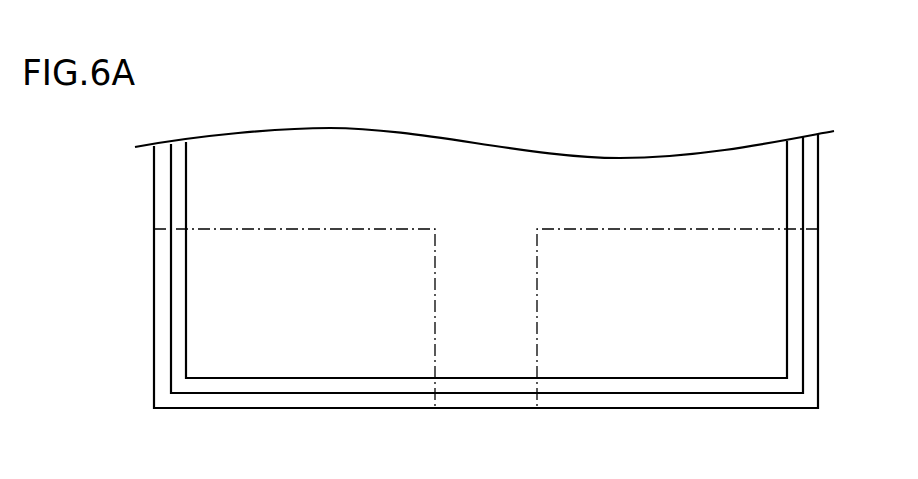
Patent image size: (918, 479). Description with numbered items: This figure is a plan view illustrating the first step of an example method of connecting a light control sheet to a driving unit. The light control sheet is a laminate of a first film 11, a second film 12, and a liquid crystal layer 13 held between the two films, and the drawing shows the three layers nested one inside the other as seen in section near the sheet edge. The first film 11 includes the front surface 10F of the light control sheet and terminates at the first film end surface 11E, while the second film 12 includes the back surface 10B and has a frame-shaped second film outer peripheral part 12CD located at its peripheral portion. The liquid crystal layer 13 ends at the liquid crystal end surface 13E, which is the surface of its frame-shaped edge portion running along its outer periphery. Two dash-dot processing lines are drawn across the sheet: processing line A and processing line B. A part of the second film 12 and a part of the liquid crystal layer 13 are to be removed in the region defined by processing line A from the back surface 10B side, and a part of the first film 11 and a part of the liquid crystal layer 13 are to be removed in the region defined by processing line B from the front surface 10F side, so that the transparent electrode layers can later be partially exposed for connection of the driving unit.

The front surface 10F is at (236, 276).
The back surface 10B is at (154, 320).
The first film 11 is at (218, 357).
The liquid crystal layer 13 is at (273, 394).
The second film 12 is at (331, 409).
The first film end surface 11E is at (450, 379).
The liquid crystal end surface 13E is at (477, 386).
The second film outer peripheral part 12CD is at (523, 402).
The processing line A is at (638, 229).
The processing line B is at (255, 229).